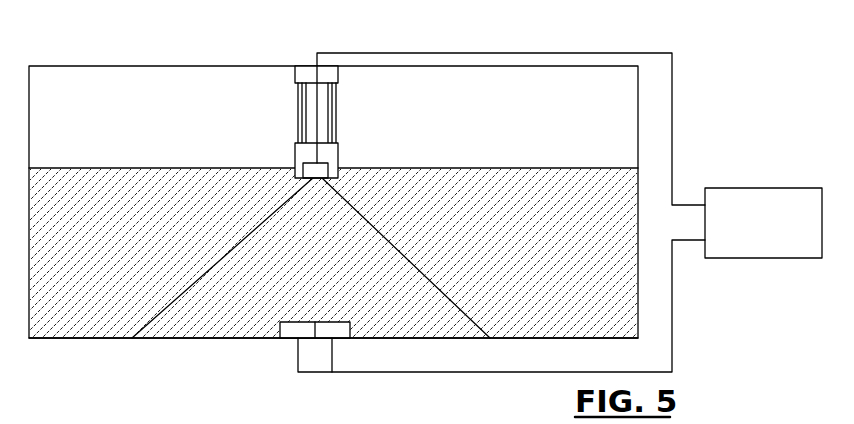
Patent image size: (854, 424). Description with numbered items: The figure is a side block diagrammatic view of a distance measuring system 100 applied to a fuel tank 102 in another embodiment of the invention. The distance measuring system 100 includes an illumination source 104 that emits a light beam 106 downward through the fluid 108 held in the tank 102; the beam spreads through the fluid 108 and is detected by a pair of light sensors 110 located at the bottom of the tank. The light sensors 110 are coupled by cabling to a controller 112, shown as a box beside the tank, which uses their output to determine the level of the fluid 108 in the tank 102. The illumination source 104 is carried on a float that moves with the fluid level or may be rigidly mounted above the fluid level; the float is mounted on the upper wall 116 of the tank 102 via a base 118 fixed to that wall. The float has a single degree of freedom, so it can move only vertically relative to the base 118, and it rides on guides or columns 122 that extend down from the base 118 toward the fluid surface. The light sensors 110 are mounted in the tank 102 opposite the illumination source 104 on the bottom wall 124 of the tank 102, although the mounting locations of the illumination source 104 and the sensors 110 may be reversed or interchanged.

The distance measuring system 100 is at (727, 80).
The fuel tank 102 is at (107, 66).
The illumination source 104 is at (327, 167).
The light beam 106 is at (256, 228).
The fluid 108 is at (503, 168).
The light sensors 110 is at (323, 330).
The controller 112 is at (728, 188).
The upper wall 116 is at (525, 67).
The base 118 is at (295, 67).
The guides or columns 122 is at (298, 97).
The bottom wall 124 is at (88, 338).